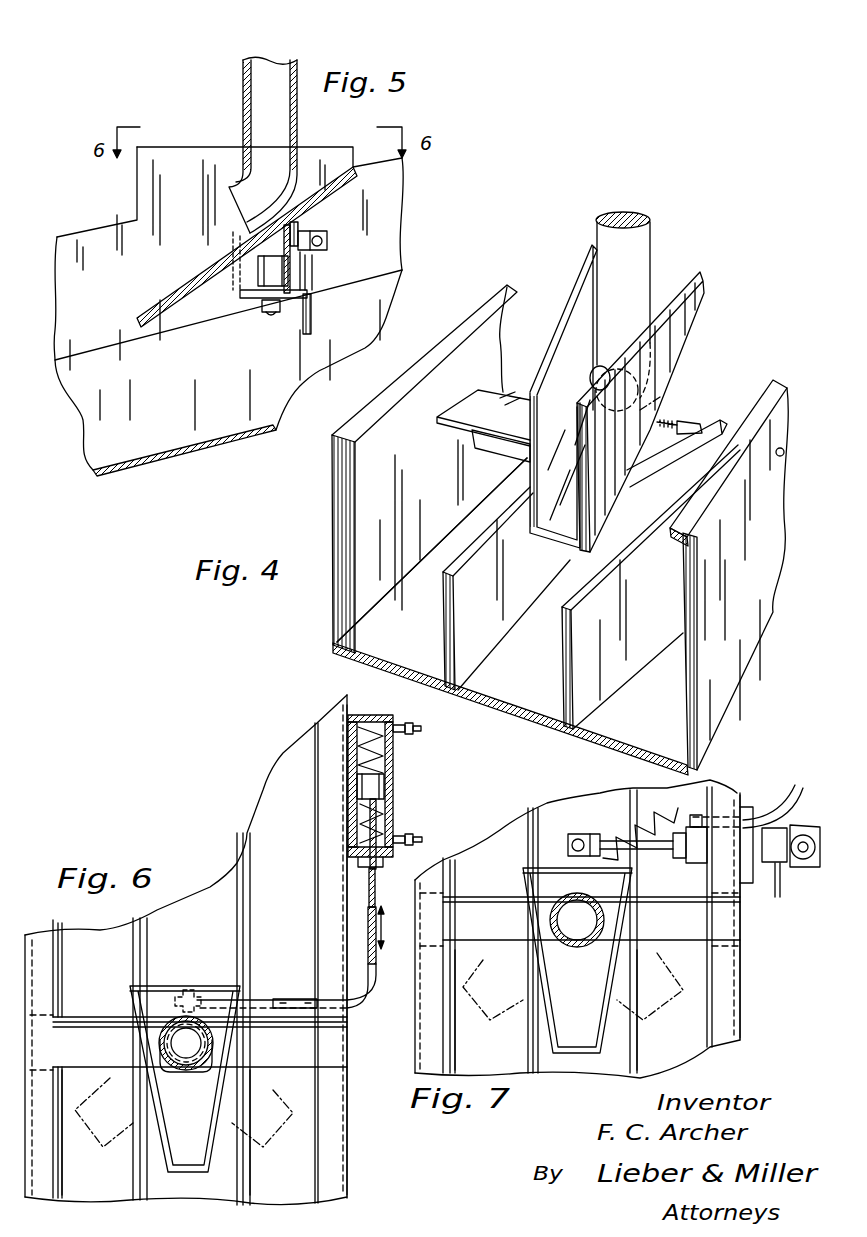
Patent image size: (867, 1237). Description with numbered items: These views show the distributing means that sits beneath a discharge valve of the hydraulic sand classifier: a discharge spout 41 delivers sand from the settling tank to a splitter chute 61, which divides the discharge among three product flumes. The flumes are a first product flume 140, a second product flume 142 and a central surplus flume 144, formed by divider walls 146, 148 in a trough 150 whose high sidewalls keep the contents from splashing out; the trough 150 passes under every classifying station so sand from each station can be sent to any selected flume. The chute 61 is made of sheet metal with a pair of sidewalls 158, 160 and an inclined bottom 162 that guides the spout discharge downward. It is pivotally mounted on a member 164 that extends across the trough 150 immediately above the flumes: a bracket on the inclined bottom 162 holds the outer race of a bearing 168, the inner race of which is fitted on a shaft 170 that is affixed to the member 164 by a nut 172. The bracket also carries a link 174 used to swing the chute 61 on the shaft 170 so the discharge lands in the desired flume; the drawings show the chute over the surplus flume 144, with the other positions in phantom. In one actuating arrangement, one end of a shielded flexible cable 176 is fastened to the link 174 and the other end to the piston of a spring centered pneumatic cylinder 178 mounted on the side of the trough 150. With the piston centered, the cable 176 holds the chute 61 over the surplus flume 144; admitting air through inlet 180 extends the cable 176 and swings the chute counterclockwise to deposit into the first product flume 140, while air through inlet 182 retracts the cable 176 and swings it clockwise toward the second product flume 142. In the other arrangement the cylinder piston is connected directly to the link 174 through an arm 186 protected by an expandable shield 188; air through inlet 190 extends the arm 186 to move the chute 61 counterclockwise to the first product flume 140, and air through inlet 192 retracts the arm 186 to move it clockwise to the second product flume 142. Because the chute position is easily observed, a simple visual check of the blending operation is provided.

In FIG. 5, the discharge spout 41 is at (273, 72).
In FIG. 4, the discharge spout 41 is at (641, 270).
In FIG. 6, the discharge spout 41 is at (185, 1070).
In FIG. 7, the discharge spout 41 is at (598, 889).
In FIG. 4, the splitter chute 61 is at (662, 400).
In FIG. 6, the splitter chute 61 is at (240, 1000).
In FIG. 7, the splitter chute 61 is at (540, 987).
In FIG. 4, the first product flume 140 is at (660, 676).
In FIG. 6, the first product flume 140 is at (297, 1181).
In FIG. 7, the first product flume 140 is at (687, 1051).
In FIG. 4, the second product flume 142 is at (427, 614).
In FIG. 6, the second product flume 142 is at (107, 1174).
In FIG. 7, the second product flume 142 is at (497, 1051).
In FIG. 4, the surplus flume 144 is at (543, 644).
In FIG. 6, the surplus flume 144 is at (203, 1197).
In FIG. 7, the surplus flume 144 is at (585, 1067).
In FIG. 4, the divider wall 146 is at (453, 632).
In FIG. 4, the divider wall 148 is at (573, 660).
In FIG. 4, the trough 150 is at (723, 655).
In FIG. 6, the trough 150 is at (349, 1147).
In FIG. 7, the trough 150 is at (743, 989).
In FIG. 4, the sidewall 158 is at (683, 280).
In FIG. 4, the sidewall 160 is at (574, 304).
In FIG. 5, the inclined bottom 162 is at (333, 197).
In FIG. 4, the inclined bottom 162 is at (548, 545).
In FIG. 5, the member 164 is at (296, 231).
In FIG. 5, the bearing 168 is at (290, 266).
In FIG. 5, the shaft 170 is at (271, 318).
In FIG. 5, the nut 172 is at (253, 305).
In FIG. 5, the link 174 is at (328, 242).
In FIG. 6, the link 174 is at (207, 975).
In FIG. 7, the link 174 is at (567, 845).
In FIG. 4, the shielded flexible cable 176 is at (667, 423).
In FIG. 6, the shielded flexible cable 176 is at (383, 930).
In FIG. 6, the spring centered pneumatic cylinder 178 is at (394, 768).
In FIG. 6, the inlet 180 is at (418, 727).
In FIG. 6, the inlet 182 is at (422, 838).
In FIG. 7, the arm 186 is at (668, 850).
In FIG. 7, the expandable shield 188 is at (685, 781).
In FIG. 7, the inlet 190 is at (778, 897).
In FIG. 7, the inlet 192 is at (800, 777).